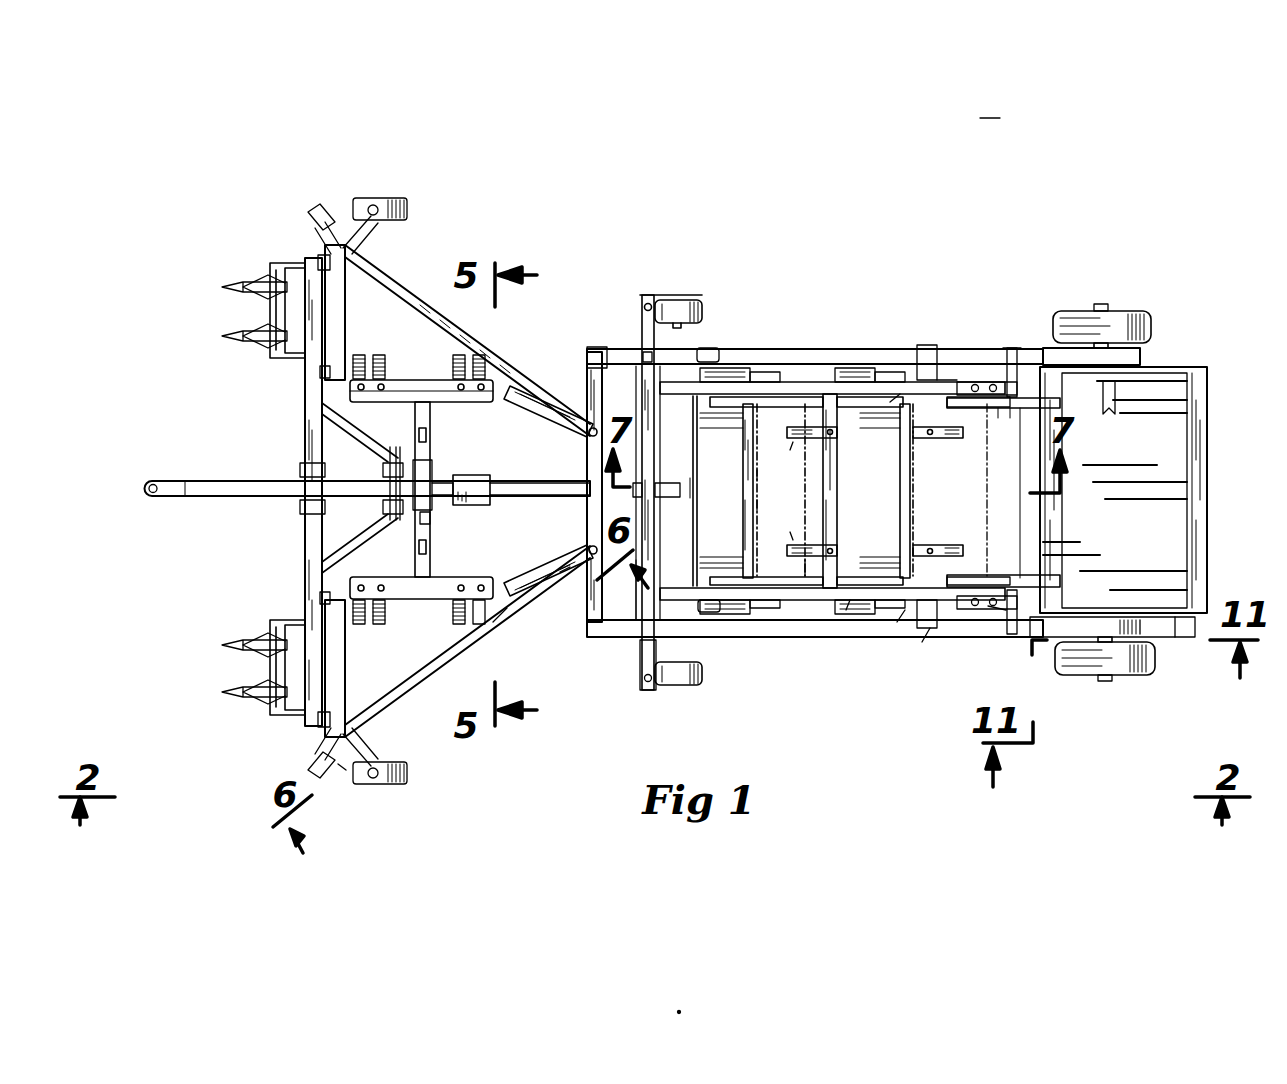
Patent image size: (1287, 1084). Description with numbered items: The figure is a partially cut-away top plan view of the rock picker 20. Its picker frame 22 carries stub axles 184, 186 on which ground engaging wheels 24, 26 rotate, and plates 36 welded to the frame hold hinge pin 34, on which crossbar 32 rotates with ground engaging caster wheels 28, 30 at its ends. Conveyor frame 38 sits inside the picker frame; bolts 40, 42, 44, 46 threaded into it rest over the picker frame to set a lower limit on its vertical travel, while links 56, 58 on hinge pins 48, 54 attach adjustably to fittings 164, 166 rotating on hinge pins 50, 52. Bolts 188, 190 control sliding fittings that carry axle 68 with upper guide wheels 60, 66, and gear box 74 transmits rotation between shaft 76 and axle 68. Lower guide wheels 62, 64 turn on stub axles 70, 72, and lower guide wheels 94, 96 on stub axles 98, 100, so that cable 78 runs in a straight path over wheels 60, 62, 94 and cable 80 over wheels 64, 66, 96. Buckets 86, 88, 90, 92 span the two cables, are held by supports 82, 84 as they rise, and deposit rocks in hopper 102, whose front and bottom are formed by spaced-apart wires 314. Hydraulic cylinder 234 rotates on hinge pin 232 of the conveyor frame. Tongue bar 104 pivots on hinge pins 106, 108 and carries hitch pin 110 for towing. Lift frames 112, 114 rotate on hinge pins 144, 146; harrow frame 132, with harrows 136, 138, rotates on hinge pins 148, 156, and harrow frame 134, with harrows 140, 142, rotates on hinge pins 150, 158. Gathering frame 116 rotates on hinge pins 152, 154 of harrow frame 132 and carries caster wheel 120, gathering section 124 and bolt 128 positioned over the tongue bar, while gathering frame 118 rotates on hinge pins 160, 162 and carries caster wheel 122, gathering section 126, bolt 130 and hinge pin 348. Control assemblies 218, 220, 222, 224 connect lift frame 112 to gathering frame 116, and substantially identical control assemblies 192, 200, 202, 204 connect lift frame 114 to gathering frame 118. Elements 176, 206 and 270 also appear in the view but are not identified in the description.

The rock picker 20 is at (930, 183).
The picker frame 22 is at (935, 641).
The ground engaging wheel 24 is at (1135, 312).
The ground engaging wheel 26 is at (1154, 660).
The ground engaging caster wheel 28 is at (689, 298).
The ground engaging caster wheel 30 is at (690, 684).
The crossbar 32 is at (640, 665).
The hinge pin 34 is at (622, 501).
The plates 36 is at (668, 486).
The conveyor frame 38 is at (852, 620).
The bolt 40 is at (1010, 348).
The bolt 42 is at (666, 366).
The bolt 44 is at (663, 628).
The bolt 46 is at (1012, 640).
The hinge pin 48 is at (846, 368).
The hinge pin 50 is at (708, 348).
The hinge pin 52 is at (706, 630).
The hinge pin 54 is at (832, 612).
The link 56 is at (786, 382).
The link 58 is at (795, 608).
The upper guide wheel 60 is at (1056, 402).
The lower guide wheel 62 is at (758, 491).
The lower guide wheel 64 is at (780, 562).
The upper guide wheel 66 is at (1058, 583).
The axle 68 is at (998, 384).
The stub axle 70 is at (763, 376).
The stub axle 72 is at (762, 622).
The gear box 74 is at (990, 624).
The shaft 76 is at (981, 630).
The cable 78 is at (966, 428).
The cable 80 is at (968, 564).
The support 82 is at (793, 442).
The support 84 is at (793, 544).
The bucket 86 is at (987, 506).
The bucket 88 is at (925, 488).
The bucket 90 is at (777, 483).
The bucket 92 is at (773, 504).
The lower guide wheel 94 is at (850, 426).
The lower guide wheel 96 is at (848, 554).
The stub axle 98 is at (882, 380).
The stub axle 100 is at (864, 614).
The hopper 102 is at (1200, 382).
The tongue bar 104 is at (205, 499).
The hinge pin 106 is at (620, 346).
The hinge pin 108 is at (597, 636).
The hitch pin 110 is at (146, 490).
The lift frame 112 is at (447, 404).
The lift frame 114 is at (447, 575).
The gathering frame 116 is at (392, 270).
The gathering frame 118 is at (421, 700).
The ground engaging caster wheel 120 is at (374, 197).
The ground engaging caster wheel 122 is at (360, 794).
The gathering section 124 is at (324, 242).
The gathering section 126 is at (306, 752).
The bolt 128 is at (566, 400).
The bolt 130 is at (562, 544).
The harrow frame 132 is at (305, 397).
The harrow frame 134 is at (307, 534).
The harrow 136 is at (232, 289).
The harrow 138 is at (232, 334).
The harrow 140 is at (233, 646).
The harrow 142 is at (233, 693).
The hinge pin 144 is at (431, 476).
The hinge pin 146 is at (435, 507).
The hinge pin 148 is at (384, 467).
The hinge pin 150 is at (393, 507).
The hinge pin 152 is at (316, 260).
The hinge pin 154 is at (318, 377).
The hinge pin 156 is at (300, 470).
The hinge pin 158 is at (300, 506).
The hinge pin 160 is at (318, 585).
The hinge pin 162 is at (312, 727).
The fitting 164 is at (730, 368).
The fitting 166 is at (746, 614).
The hitch block 176 is at (490, 478).
The stub axle 184 is at (1100, 302).
The stub axle 186 is at (1105, 682).
The bolt 188 is at (948, 376).
The bolt 190 is at (925, 610).
The control assembly 192 is at (366, 626).
The control assembly 200 is at (386, 624).
The control assembly 202 is at (453, 617).
The control assembly 204 is at (524, 626).
The clamp 206 is at (338, 771).
The control assembly 218 is at (359, 354).
The control assembly 220 is at (379, 358).
The control assembly 222 is at (453, 360).
The control assembly 224 is at (484, 356).
The hinge pin 232 is at (918, 628).
The hydraulic cylinder 234 is at (905, 622).
The pin 270 is at (413, 528).
The spaced-apart wires 314 is at (1112, 417).
The hinge pin 348 is at (574, 576).